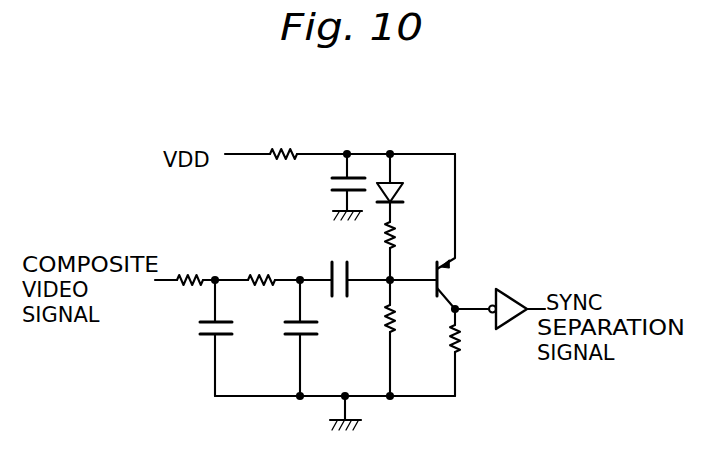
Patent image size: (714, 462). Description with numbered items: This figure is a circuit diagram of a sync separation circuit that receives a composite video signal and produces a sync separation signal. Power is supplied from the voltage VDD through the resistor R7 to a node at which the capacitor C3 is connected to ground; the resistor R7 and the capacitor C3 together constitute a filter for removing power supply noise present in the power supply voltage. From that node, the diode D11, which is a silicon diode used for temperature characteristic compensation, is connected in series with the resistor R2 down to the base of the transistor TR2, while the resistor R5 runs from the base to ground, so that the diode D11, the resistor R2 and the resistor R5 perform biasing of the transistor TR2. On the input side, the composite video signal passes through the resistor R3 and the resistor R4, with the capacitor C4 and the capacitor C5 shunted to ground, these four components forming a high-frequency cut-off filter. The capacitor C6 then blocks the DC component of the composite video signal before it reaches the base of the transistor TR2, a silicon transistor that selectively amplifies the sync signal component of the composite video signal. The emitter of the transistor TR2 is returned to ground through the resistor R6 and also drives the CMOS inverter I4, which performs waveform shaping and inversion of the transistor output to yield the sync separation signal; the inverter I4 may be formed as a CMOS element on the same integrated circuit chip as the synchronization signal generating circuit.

The resistor R7 is at (282, 138).
The capacitor C3 is at (330, 187).
The diode D11 is at (409, 188).
The resistor R2 is at (406, 250).
The resistor R3 is at (189, 264).
The resistor R4 is at (260, 264).
The capacitor C6 is at (382, 266).
The capacitor C4 is at (197, 338).
The capacitor C5 is at (285, 338).
The resistor R5 is at (403, 338).
The resistor R6 is at (468, 352).
The transistor TR2 is at (479, 302).
The CMOS inverter I4 is at (500, 301).